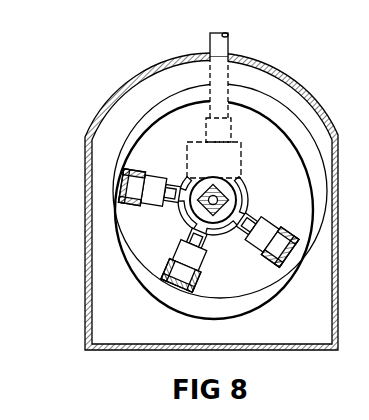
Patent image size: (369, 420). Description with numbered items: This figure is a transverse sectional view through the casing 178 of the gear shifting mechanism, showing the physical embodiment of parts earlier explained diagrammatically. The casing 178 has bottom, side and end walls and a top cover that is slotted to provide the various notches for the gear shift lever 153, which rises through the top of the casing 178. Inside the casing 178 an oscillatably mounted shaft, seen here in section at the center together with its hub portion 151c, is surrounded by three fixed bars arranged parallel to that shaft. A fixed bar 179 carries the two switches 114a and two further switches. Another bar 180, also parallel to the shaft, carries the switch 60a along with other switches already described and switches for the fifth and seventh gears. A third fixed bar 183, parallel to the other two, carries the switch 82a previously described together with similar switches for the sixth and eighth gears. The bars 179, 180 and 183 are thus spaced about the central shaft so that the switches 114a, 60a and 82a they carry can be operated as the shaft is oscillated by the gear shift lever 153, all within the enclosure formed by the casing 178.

The gear shift lever 153 is at (229, 41).
The casing 178 is at (89, 190).
The bar 180 is at (117, 199).
The switch 60a is at (157, 186).
The switches 114a is at (173, 286).
The fixed bar 179 is at (191, 285).
The hub 151c is at (213, 238).
The switch 82a is at (277, 264).
The third fixed bar 183 is at (280, 265).